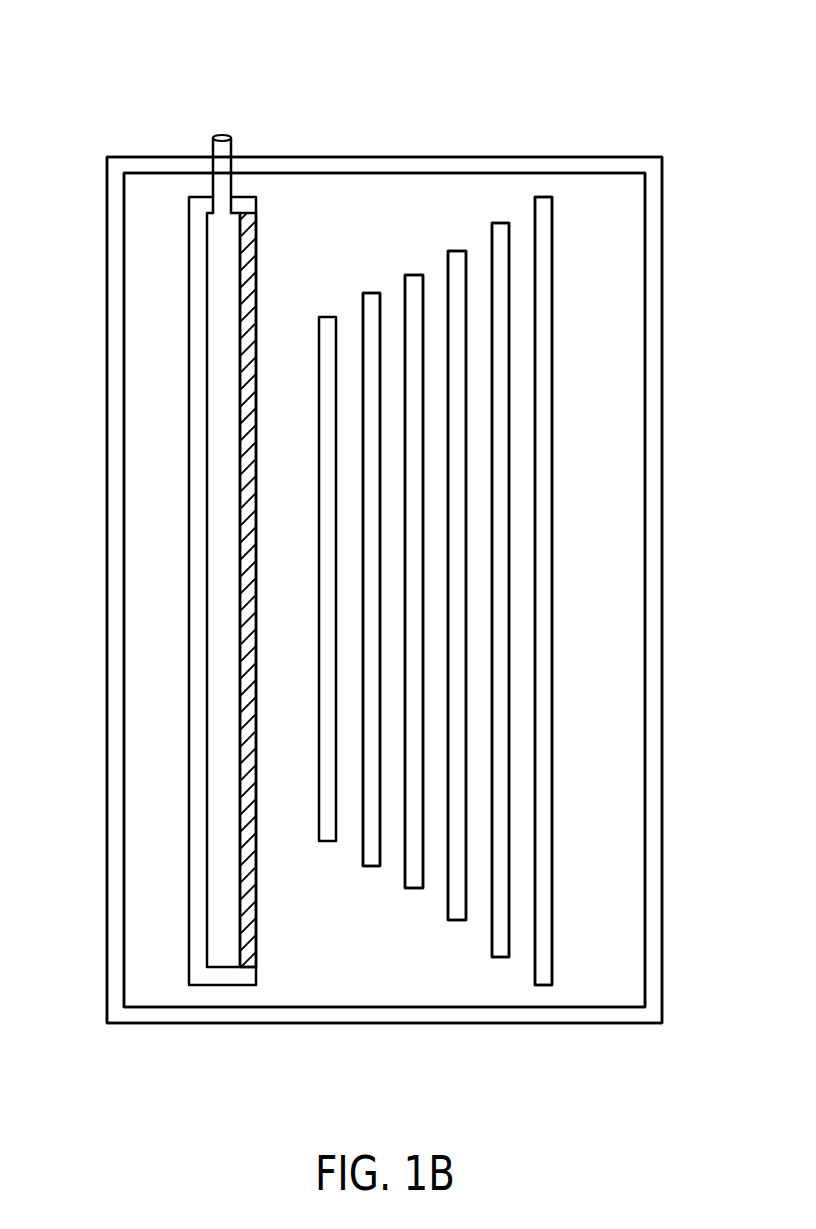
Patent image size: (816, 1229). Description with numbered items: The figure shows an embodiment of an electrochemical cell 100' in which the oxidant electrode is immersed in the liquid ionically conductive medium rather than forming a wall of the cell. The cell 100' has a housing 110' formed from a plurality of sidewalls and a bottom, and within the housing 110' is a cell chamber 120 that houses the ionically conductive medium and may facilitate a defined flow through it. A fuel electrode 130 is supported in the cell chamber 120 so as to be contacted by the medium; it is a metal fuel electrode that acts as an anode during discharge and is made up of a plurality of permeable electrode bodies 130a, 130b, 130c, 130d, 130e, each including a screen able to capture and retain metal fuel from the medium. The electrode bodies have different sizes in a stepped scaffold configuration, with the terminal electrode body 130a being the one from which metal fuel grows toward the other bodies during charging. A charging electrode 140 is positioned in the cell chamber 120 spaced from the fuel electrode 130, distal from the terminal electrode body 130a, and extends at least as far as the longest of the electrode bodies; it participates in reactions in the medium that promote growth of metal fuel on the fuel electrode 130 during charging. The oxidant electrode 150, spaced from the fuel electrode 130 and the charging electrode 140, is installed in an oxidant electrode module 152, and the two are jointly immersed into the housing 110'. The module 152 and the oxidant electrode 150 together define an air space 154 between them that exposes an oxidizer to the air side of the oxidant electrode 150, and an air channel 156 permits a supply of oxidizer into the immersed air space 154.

The cell 100' is at (351, 511).
The housing 110' is at (384, 552).
The cell chamber 120 is at (312, 966).
The fuel electrode 130 is at (531, 991).
The permeable electrode body 130a is at (543, 197).
The permeable electrode body 130b is at (500, 223).
The permeable electrode body 130c is at (455, 251).
The permeable electrode body 130d is at (415, 275).
The permeable electrode body 130e is at (370, 293).
The charging electrode 140 is at (318, 346).
The oxidant electrode 150 is at (257, 228).
The oxidant electrode module 152 is at (188, 233).
The air space 154 is at (220, 290).
The air channel 156 is at (233, 180).